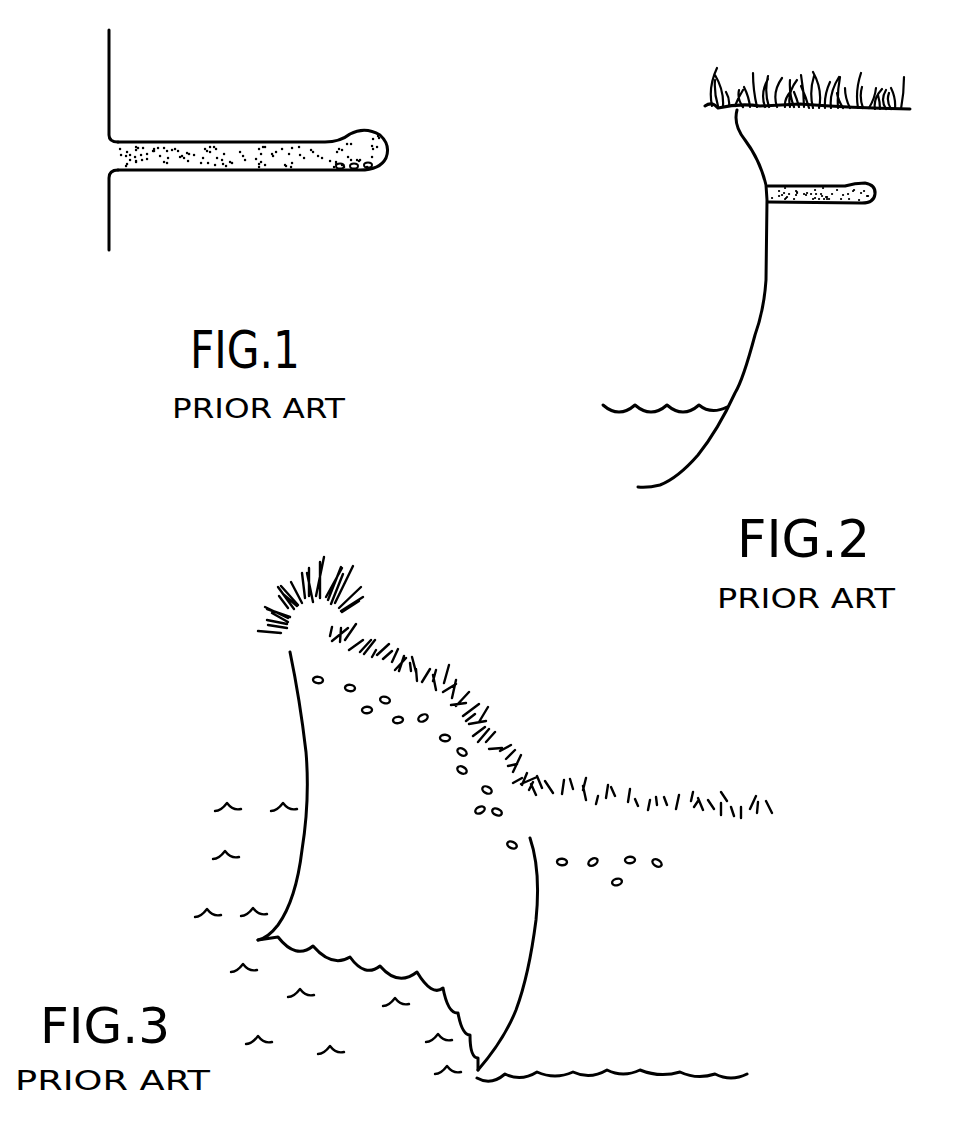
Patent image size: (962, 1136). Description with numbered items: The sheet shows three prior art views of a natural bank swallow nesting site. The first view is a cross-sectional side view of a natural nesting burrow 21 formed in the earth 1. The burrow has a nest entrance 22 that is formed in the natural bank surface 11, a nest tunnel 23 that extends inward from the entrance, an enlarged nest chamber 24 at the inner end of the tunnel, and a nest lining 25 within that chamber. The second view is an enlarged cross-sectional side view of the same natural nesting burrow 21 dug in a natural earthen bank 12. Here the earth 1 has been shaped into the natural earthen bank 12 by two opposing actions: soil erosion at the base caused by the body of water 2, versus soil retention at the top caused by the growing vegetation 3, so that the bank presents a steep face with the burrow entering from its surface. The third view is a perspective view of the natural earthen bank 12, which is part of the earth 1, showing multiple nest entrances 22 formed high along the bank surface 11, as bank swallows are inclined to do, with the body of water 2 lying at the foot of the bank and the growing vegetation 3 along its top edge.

In FIG. 1, the earth 1 is at (415, 232).
In FIG. 2, the earth 1 is at (889, 314).
In FIG. 3, the earth 1 is at (705, 958).
In FIG. 2, the body of water 2 is at (669, 441).
In FIG. 2, the growing vegetation 3 is at (840, 76).
In FIG. 1, the natural bank surface 11 is at (109, 203).
In FIG. 3, the natural bank surface 11 is at (306, 752).
In FIG. 2, the natural earthen bank 12 is at (668, 83).
In FIG. 3, the natural earthen bank 12 is at (200, 995).
In FIG. 1, the natural nesting burrow 21 is at (398, 90).
In FIG. 2, the natural nesting burrow 21 is at (877, 168).
In FIG. 1, the nest entrance 22 is at (103, 137).
In FIG. 3, the nest entrance 22 is at (397, 619).
In FIG. 1, the nest tunnel 23 is at (317, 190).
In FIG. 1, the enlarged nest chamber 24 is at (392, 190).
In FIG. 1, the nest lining 25 is at (387, 165).